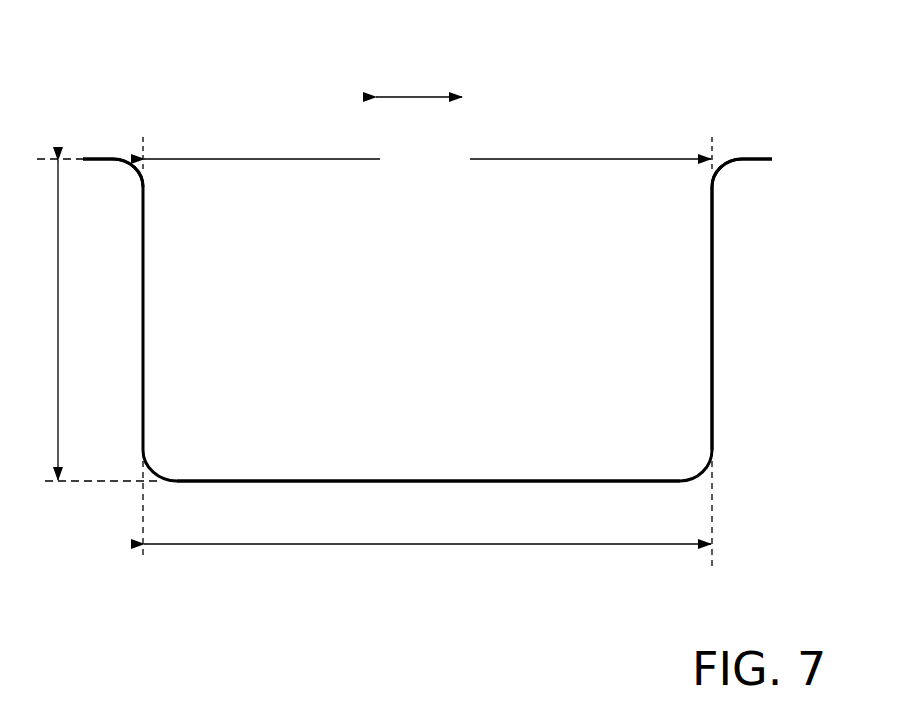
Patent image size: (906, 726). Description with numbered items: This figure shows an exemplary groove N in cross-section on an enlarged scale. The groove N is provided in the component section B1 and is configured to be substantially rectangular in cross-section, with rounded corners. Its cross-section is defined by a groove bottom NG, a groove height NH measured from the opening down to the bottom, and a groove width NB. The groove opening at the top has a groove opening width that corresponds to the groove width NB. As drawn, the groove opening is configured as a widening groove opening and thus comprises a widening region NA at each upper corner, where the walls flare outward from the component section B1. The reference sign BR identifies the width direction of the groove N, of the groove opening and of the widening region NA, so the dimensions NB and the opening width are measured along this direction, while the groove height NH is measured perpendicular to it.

The groove N is at (355, 363).
The widening region NA is at (131, 158).
The component section B1 is at (713, 323).
The groove bottom NG is at (308, 483).
The groove height NH is at (36, 320).
The groove width NB is at (427, 565).
The width direction BR is at (419, 80).